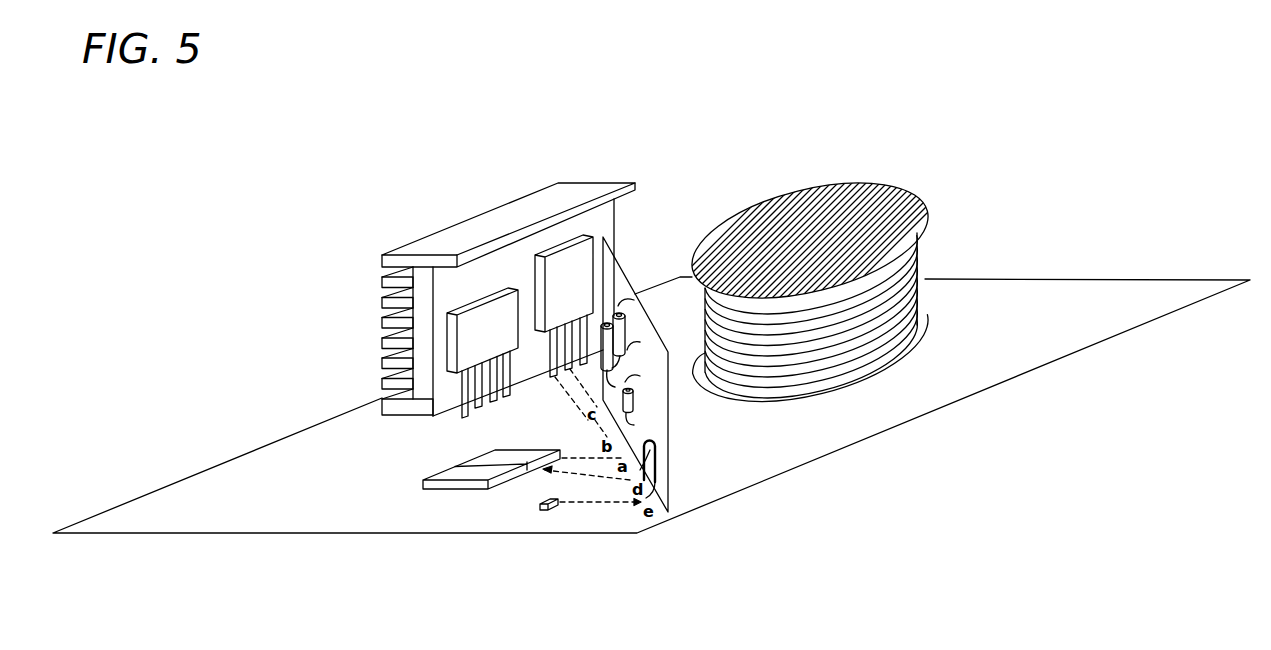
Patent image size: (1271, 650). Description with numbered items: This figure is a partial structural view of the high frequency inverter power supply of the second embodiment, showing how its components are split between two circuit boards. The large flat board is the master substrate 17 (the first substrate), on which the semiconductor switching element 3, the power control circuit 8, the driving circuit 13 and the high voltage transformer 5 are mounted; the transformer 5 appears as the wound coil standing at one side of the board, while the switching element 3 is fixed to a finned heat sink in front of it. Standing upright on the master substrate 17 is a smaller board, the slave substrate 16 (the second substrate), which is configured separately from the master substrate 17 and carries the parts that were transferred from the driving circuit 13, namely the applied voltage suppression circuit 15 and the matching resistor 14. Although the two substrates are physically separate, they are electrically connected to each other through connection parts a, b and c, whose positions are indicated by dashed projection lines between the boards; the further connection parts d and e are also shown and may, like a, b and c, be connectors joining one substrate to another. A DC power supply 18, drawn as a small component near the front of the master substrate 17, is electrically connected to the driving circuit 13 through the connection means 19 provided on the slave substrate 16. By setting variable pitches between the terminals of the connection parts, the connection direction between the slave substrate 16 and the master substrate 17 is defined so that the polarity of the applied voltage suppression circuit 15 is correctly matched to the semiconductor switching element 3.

The semiconductor switching element 3 is at (540, 278).
The high voltage transformer 5 is at (921, 203).
The power control circuit 8 is at (460, 474).
The driving circuit 13 is at (500, 455).
The matching resistor 14 is at (636, 402).
The applied voltage suppression circuit 15 is at (625, 336).
The slave substrate 16 is at (618, 265).
The master substrate 17 is at (993, 290).
The DC power supply 18 is at (538, 510).
The connection means 19 is at (658, 450).